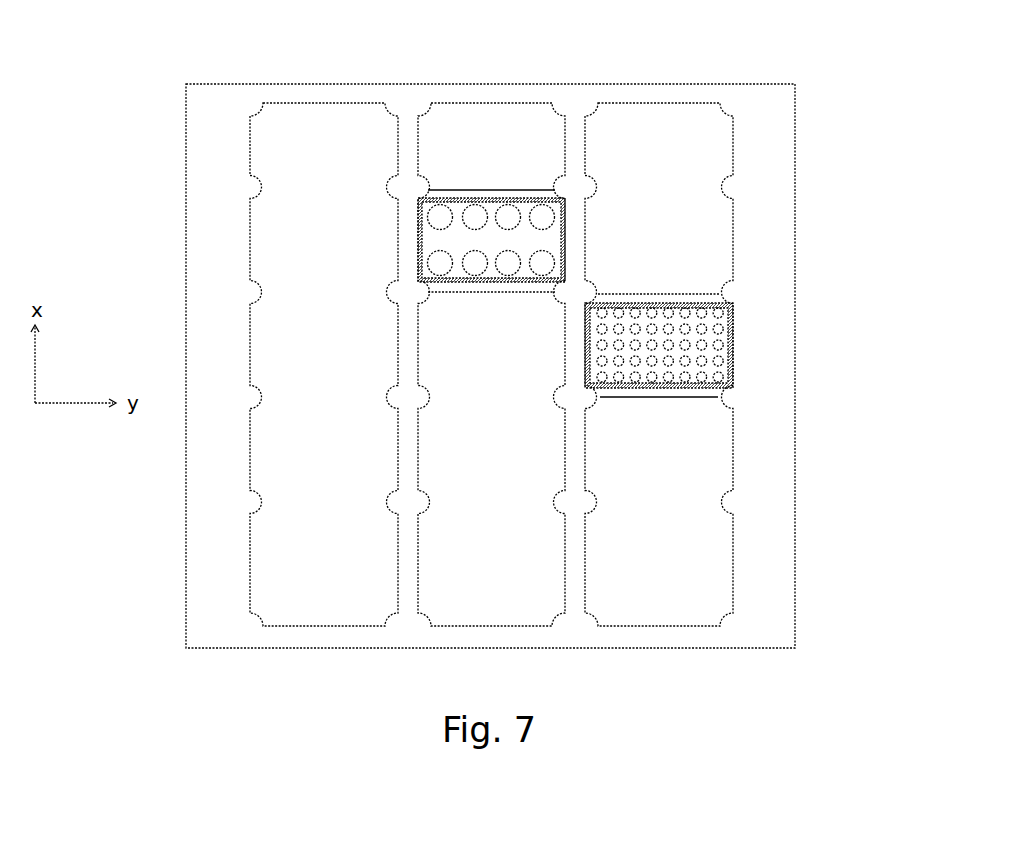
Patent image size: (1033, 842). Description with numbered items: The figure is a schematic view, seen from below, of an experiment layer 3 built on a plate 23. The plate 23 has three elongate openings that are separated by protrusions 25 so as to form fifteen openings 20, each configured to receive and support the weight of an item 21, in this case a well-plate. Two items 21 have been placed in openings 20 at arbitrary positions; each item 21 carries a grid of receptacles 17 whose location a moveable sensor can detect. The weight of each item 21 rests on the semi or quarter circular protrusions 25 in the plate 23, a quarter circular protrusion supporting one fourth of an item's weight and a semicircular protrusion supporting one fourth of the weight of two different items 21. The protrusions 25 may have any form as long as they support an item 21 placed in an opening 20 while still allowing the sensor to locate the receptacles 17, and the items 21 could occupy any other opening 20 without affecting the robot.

The experiment layer 3 is at (806, 160).
The receptacles 17 is at (474, 204).
The openings 20 is at (713, 464).
The items 21 is at (508, 182).
The plate 23 is at (780, 458).
The protrusions 25 is at (372, 276).